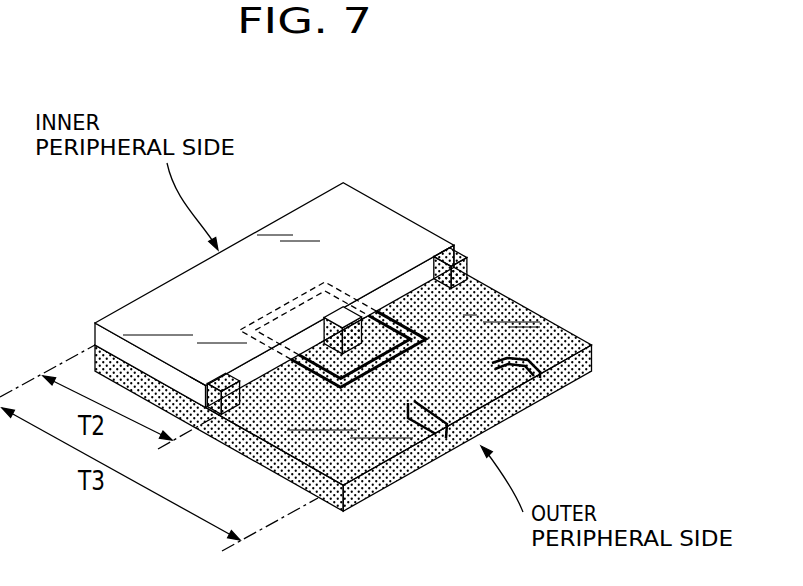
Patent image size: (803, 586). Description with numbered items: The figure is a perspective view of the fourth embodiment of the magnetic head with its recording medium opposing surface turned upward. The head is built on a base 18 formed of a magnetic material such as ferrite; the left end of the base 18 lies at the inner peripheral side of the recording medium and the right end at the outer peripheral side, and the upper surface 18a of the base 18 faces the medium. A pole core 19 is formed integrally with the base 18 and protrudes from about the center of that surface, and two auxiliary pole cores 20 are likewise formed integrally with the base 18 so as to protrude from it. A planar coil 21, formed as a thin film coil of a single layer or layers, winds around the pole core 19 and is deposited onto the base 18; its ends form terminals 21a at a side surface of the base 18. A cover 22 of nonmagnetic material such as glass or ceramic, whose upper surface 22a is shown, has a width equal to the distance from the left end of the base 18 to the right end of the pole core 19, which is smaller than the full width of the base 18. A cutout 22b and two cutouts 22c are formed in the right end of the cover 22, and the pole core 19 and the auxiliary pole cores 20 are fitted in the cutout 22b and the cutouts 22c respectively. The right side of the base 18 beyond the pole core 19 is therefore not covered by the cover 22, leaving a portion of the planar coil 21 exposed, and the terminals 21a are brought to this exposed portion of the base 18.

The base 18 is at (370, 358).
The upper surface of base member 18a is at (502, 310).
The pole core 19 is at (344, 306).
The auxiliary pole cores 20 is at (213, 374).
The planar coil 21 is at (365, 300).
The terminals 21a is at (448, 437).
The cover 22 is at (288, 263).
The upper surface of plate member 22a is at (332, 213).
The cutout 22b is at (328, 314).
The cutouts 22c is at (228, 371).